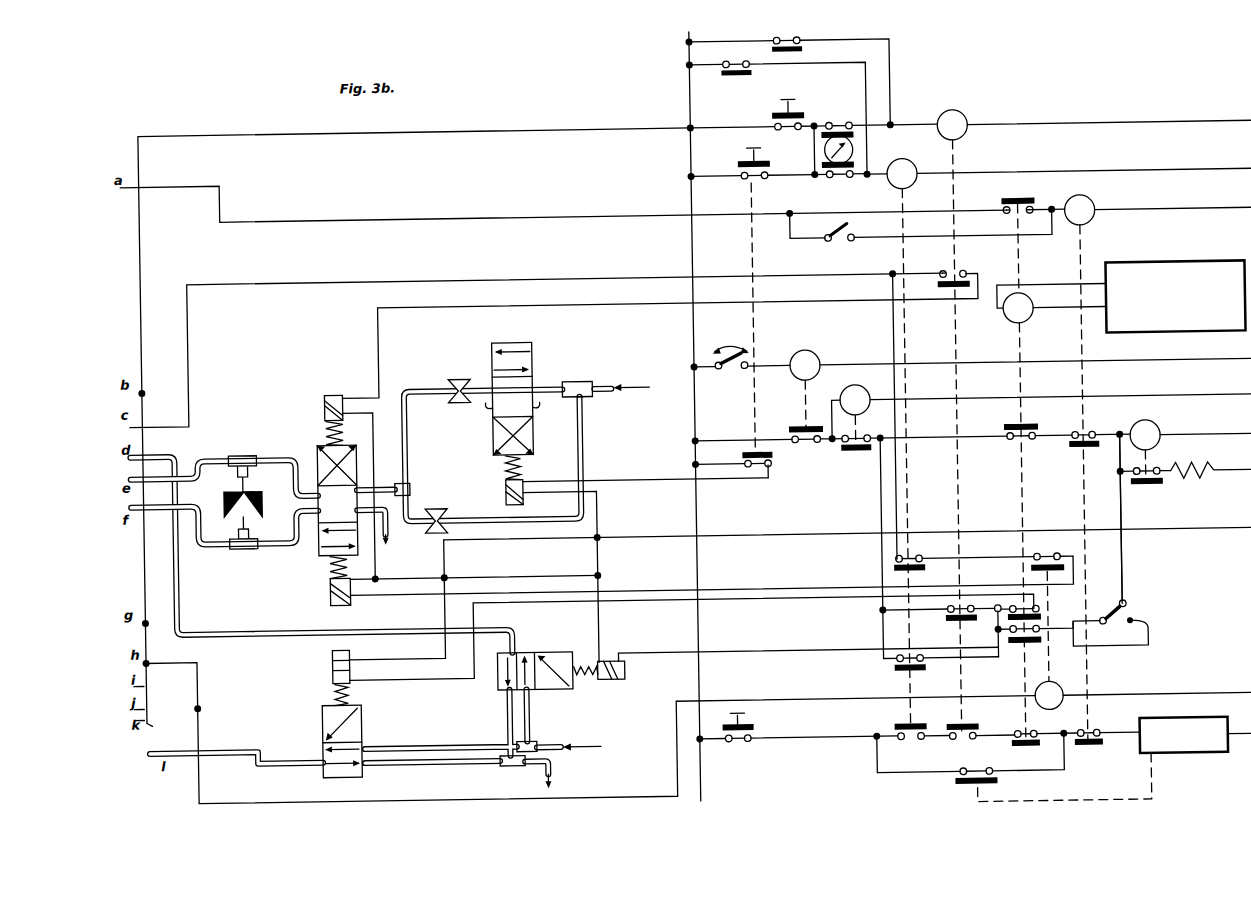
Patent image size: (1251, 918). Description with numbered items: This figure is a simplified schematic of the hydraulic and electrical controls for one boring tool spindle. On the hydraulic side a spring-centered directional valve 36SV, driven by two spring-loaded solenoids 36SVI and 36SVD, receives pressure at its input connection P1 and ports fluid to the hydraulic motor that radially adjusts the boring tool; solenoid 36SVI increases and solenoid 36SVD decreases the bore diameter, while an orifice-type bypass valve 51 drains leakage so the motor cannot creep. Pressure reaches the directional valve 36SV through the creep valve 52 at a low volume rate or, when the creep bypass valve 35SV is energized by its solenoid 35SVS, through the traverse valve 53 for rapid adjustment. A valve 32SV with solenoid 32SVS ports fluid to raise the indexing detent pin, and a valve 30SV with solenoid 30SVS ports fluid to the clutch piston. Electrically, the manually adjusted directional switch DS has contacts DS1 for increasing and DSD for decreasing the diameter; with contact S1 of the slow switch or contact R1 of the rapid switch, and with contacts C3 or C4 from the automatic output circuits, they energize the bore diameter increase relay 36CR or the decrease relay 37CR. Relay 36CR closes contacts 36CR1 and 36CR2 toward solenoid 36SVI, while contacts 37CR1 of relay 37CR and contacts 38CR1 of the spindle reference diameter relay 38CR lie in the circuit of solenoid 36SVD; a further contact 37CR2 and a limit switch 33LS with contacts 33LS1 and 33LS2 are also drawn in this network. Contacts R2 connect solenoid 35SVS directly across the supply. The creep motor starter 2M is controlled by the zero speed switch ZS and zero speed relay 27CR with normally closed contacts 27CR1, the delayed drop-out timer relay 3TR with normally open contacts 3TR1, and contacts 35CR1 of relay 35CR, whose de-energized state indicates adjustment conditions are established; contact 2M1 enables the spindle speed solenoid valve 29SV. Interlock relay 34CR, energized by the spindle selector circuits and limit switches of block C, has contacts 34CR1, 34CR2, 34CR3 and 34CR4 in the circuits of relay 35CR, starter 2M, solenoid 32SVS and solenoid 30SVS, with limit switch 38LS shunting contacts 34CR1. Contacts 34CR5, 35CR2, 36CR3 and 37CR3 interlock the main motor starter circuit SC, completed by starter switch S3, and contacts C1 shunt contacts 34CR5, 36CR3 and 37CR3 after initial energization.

The bypass valve 51 is at (246, 486).
The creep valve 52 is at (441, 508).
The traverse valve 53 is at (462, 376).
The directional valve 36SV is at (317, 543).
The solenoid 36SVI is at (639, 428).
The solenoid 36SVD is at (691, 584).
The creep bypass valve 35SV is at (574, 386).
The solenoid 35SVS is at (505, 490).
The valve 30SV is at (556, 724).
The solenoid 30SVS is at (786, 676).
The solenoid valve 32SV is at (340, 751).
The solenoid 32SVS is at (343, 646).
The solenoid valve 29SV is at (1210, 460).
The input fluid pressure connection P1 is at (394, 479).
The contacts C3 is at (789, 83).
The contacts C4 is at (778, 120).
The contacts C1 is at (971, 760).
The spindle selector circuits and spindle limit switches block C is at (1153, 263).
The contact of slow switch S1 is at (766, 114).
The push button switch S3 is at (797, 723).
The contact of rapid switch R1 is at (744, 164).
The contacts of rapid switch R2 is at (749, 454).
The directional switch DS is at (829, 151).
The contacts DS1 is at (846, 126).
The contacts DSD is at (839, 178).
The zero speed switch ZS is at (740, 347).
The zero speed relay 27CR is at (1018, 375).
The contacts 27CR1 is at (761, 442).
The delayed drop-out timer relay 3TR is at (1039, 403).
The contacts 3TR1 is at (921, 546).
The creep motor starter switch 2M is at (1185, 501).
The contact 2M1 is at (1144, 481).
The interlock relay 34CR is at (1054, 472).
The contacts 34CR1 is at (1024, 197).
The contacts 34CR2 is at (1038, 422).
The contacts 34CR3 is at (1036, 614).
The contacts 34CR4 is at (1020, 648).
The contacts 34CR5 is at (1039, 745).
The relay 35CR is at (1151, 456).
The contacts 35CR1 is at (1081, 445).
The contacts 35CR2 is at (1101, 744).
The bore diameter increase relay 36CR is at (1070, 409).
The contacts 36CR1 is at (944, 406).
The contacts 36CR2 is at (937, 620).
The contacts 36CR3 is at (978, 739).
The boring diameter decrease relay 37CR is at (1059, 430).
The contacts 37CR1 is at (895, 570).
The relay contact 37CR2 is at (896, 671).
The contacts 37CR3 is at (918, 740).
The spindle reference diameter relay 38CR is at (1143, 694).
The contacts 38CR1 is at (1054, 608).
The limit switch 38LS is at (921, 231).
The limit switch 33LS is at (1130, 615).
The limit switch contact 33LS1 is at (1124, 604).
The limit switch contact 33LS2 is at (1148, 633).
The main motor starter circuit SC is at (1221, 719).